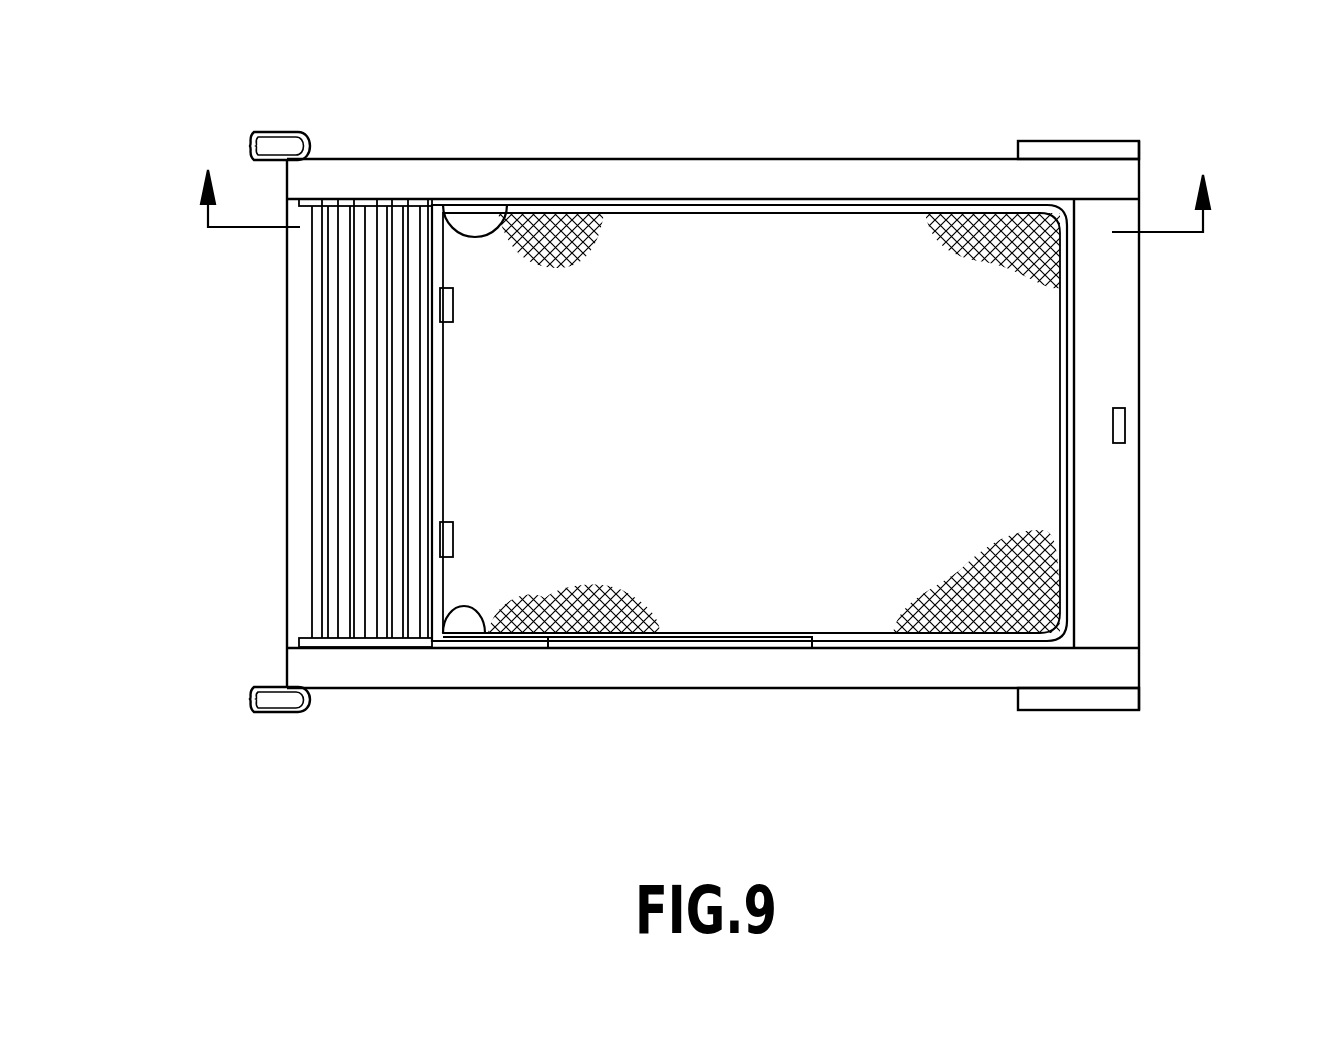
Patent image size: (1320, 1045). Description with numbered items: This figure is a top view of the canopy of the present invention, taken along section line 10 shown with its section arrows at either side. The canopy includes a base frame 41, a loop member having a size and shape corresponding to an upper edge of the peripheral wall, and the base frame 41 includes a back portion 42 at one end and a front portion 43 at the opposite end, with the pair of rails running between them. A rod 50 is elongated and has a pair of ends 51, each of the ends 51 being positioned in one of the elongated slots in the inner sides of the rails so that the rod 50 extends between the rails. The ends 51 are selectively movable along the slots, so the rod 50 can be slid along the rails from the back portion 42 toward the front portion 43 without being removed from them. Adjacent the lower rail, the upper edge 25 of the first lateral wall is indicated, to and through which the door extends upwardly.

The section line 10 is at (712, 239).
The upper edge 25 is at (752, 648).
The base frame 41 is at (1140, 666).
The back portion 42 is at (287, 493).
The front portion 43 is at (1140, 504).
The rod 50 is at (445, 443).
The ends 51 is at (518, 200).